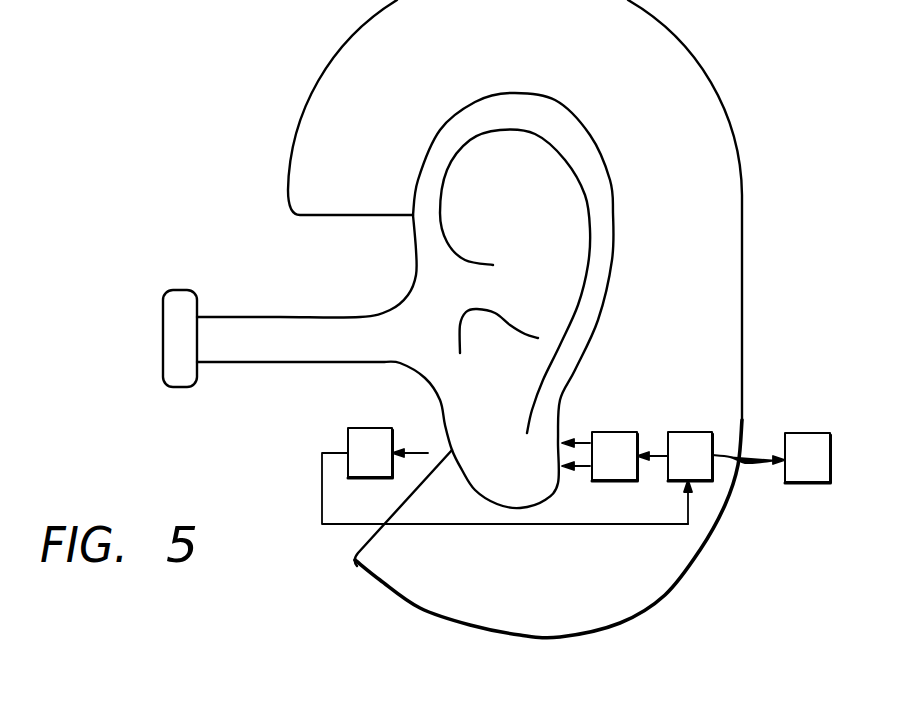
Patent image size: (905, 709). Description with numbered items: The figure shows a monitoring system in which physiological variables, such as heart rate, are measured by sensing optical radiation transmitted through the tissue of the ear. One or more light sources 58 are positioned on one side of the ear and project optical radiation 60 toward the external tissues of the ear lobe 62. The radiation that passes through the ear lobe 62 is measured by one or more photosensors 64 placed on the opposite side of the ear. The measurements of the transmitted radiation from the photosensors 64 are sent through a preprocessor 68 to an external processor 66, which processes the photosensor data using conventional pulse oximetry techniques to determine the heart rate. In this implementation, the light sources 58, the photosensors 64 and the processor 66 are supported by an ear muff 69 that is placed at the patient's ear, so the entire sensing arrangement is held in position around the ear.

The light source 58 is at (612, 432).
The optical radiation 60 is at (575, 437).
The ear lobe 62 is at (524, 490).
The photosensor 64 is at (370, 428).
The external processor 66 is at (806, 433).
The preprocessor 68 is at (690, 432).
The ear muff 69 is at (288, 140).